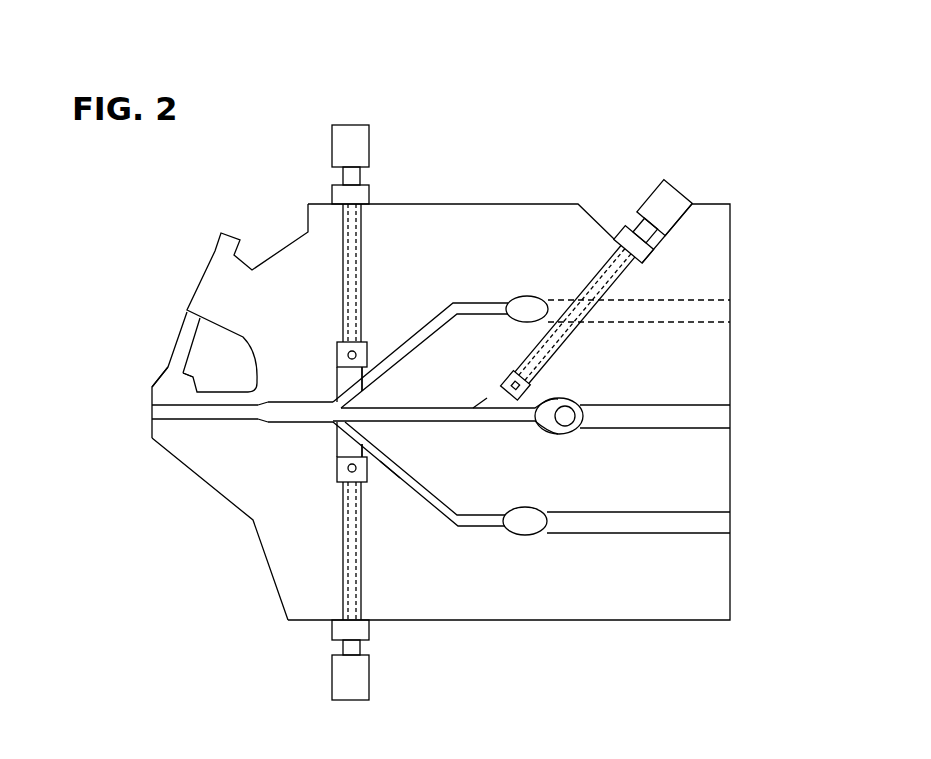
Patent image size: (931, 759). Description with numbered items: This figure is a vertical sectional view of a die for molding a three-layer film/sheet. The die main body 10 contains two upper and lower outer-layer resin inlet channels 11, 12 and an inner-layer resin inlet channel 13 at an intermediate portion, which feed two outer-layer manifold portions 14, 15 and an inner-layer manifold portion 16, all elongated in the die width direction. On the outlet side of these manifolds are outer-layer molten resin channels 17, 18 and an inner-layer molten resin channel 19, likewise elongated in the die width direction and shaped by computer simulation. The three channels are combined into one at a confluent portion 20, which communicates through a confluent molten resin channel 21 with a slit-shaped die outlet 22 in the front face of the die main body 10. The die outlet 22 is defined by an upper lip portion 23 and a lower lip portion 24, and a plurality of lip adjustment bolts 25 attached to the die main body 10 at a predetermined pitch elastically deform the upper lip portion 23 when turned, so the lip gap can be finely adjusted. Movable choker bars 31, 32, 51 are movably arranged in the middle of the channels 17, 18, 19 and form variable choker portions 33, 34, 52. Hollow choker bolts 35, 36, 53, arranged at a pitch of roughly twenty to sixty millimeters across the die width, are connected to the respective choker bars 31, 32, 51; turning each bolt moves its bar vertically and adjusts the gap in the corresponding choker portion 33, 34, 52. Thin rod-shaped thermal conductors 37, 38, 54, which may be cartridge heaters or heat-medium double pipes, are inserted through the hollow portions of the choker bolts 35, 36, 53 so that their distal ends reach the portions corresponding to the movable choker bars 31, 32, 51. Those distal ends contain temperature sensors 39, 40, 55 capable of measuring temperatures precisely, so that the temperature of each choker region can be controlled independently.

The die main body 10 is at (504, 212).
The outer-layer resin inlet channel 11 is at (733, 305).
The outer-layer resin inlet channel 12 is at (733, 523).
The inner-layer resin inlet channel 13 is at (733, 416).
The outer-layer manifold portion 14 is at (526, 307).
The outer-layer manifold portion 15 is at (530, 523).
The inner-layer manifold portion 16 is at (552, 430).
The outer-layer molten resin channel 17 is at (418, 330).
The outer-layer molten resin channel 18 is at (428, 500).
The inner-layer molten resin channel 19 is at (412, 418).
The confluent portion 20 is at (327, 420).
The confluent molten resin channel 21 is at (287, 410).
The die outlet 22 is at (150, 412).
The upper lip portion 23 is at (160, 380).
The lower lip portion 24 is at (162, 442).
The lip adjustment bolt 25 is at (175, 340).
The movable choker bar 31 is at (338, 380).
The movable choker bar 32 is at (337, 448).
The variable choker portion 33 is at (368, 388).
The variable choker portion 34 is at (362, 437).
The hollow choker bolt 35 is at (342, 245).
The hollow choker bolt 36 is at (342, 570).
The thermal conductor 37 is at (360, 227).
The thermal conductor 38 is at (342, 597).
The temperature sensor 39 is at (335, 357).
The temperature sensor 40 is at (337, 472).
The movable choker bar 51 is at (483, 405).
The variable choker portion 52 is at (465, 417).
The hollow choker bolt 53 is at (593, 278).
The thermal conductor 54 is at (557, 340).
The temperature sensor 55 is at (507, 377).